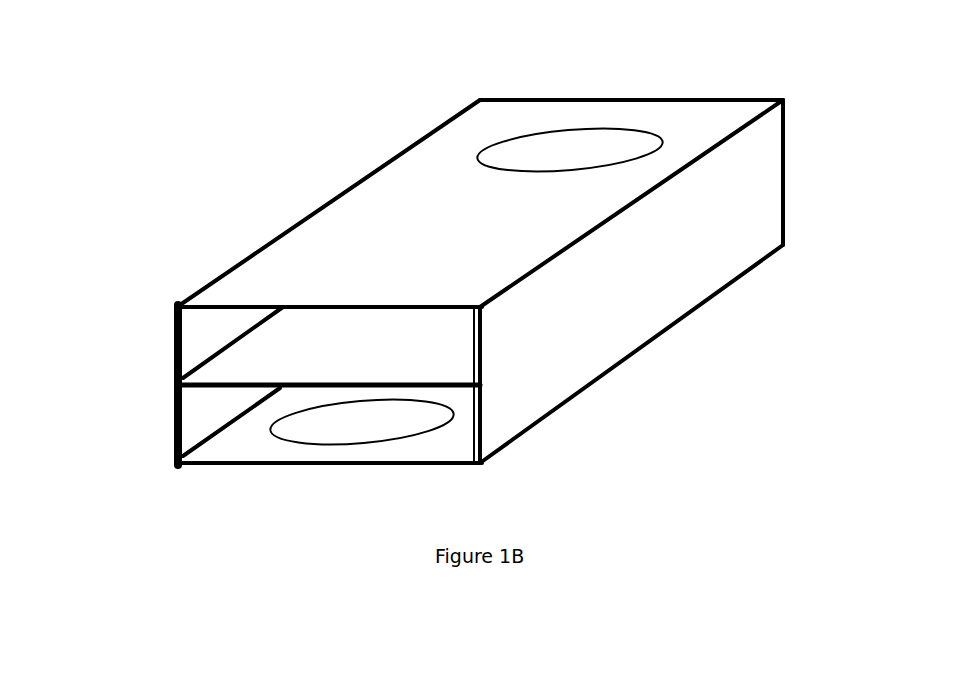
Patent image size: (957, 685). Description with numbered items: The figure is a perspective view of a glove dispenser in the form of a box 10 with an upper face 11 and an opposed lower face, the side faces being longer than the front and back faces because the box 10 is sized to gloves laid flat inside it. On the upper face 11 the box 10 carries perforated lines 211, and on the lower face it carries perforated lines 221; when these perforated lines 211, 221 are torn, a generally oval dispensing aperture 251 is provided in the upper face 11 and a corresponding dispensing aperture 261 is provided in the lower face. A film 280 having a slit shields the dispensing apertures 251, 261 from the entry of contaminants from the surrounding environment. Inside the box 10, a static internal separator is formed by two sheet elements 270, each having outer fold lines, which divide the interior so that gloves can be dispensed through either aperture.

The box 10 is at (338, 145).
The upper face 11 is at (305, 260).
The perforated lines 211 is at (633, 128).
The dispensing aperture 251 is at (527, 147).
The film 280 is at (582, 150).
The sheet elements 270 is at (213, 352).
The perforated lines 221 is at (287, 435).
The dispensing aperture 261 is at (407, 418).